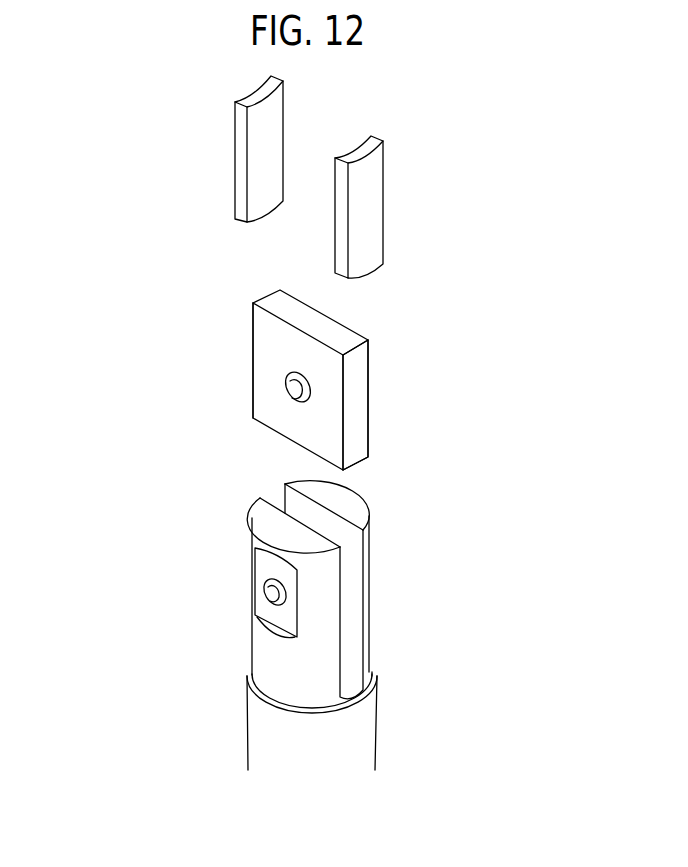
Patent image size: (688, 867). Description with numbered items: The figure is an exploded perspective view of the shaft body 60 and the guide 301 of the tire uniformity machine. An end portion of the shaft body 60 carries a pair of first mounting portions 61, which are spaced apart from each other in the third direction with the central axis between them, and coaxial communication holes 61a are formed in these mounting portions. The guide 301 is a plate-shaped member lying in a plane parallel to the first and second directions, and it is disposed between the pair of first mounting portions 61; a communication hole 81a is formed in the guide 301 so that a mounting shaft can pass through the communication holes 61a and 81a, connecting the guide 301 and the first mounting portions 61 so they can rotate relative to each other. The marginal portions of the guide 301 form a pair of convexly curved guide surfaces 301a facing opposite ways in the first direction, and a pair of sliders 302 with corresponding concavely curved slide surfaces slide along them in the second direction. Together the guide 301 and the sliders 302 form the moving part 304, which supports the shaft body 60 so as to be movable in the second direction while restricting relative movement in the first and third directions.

The slider 302 is at (240, 145).
The moving part 304 is at (320, 273).
The guide 301 is at (339, 372).
The guide surface 301a is at (253, 330).
The communication hole 81a is at (297, 402).
The first mounting portion 61 is at (315, 590).
The communication hole 61a is at (270, 602).
The shaft body 60 is at (362, 740).